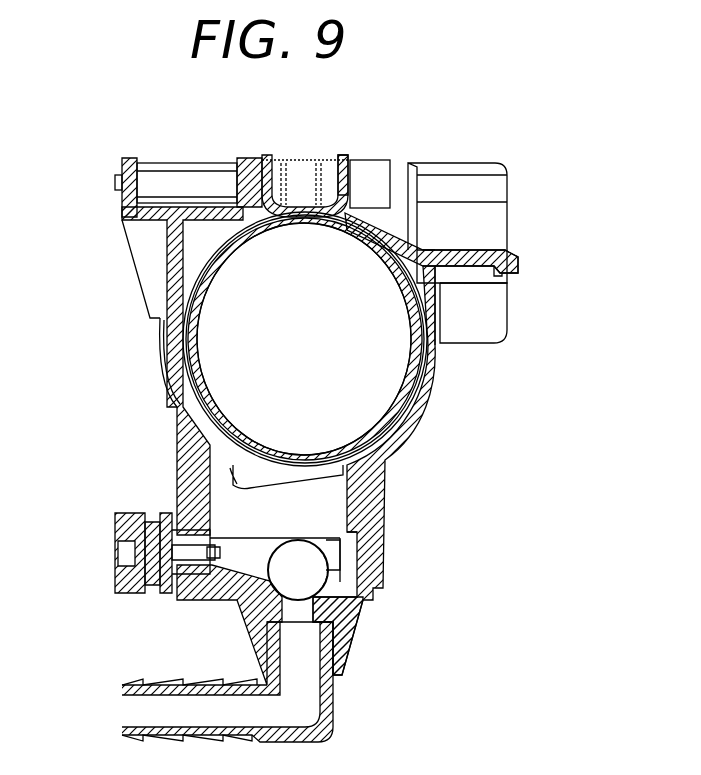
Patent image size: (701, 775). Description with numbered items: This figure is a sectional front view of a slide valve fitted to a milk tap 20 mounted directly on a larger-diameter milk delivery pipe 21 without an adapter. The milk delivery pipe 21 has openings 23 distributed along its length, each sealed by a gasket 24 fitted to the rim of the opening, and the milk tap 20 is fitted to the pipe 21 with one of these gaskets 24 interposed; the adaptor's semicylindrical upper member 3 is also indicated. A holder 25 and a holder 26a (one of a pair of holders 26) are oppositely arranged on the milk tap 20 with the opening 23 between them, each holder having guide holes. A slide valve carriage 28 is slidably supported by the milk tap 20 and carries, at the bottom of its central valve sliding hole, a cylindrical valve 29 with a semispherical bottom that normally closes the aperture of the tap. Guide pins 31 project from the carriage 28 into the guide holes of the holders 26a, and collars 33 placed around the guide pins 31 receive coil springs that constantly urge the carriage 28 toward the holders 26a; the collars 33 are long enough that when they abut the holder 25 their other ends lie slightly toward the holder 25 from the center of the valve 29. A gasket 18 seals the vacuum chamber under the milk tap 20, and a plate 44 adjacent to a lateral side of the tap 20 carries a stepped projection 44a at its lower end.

The semicylindrical upper member 3 is at (437, 282).
The gasket 18 is at (233, 462).
The milk tap 20 is at (138, 268).
The milk delivery pipe 21 is at (164, 352).
The opening 23 is at (298, 224).
The gasket 24 is at (328, 222).
The holder 25 is at (128, 160).
The holder 26 is at (340, 158).
The holder 26a is at (413, 162).
The slide valve carriage 28 is at (318, 160).
The cylindrical valve 29 is at (268, 160).
The guide pin 31 is at (322, 532).
The collar 33 is at (190, 178).
The plate 44 is at (467, 250).
The stepped projection 44a is at (510, 272).